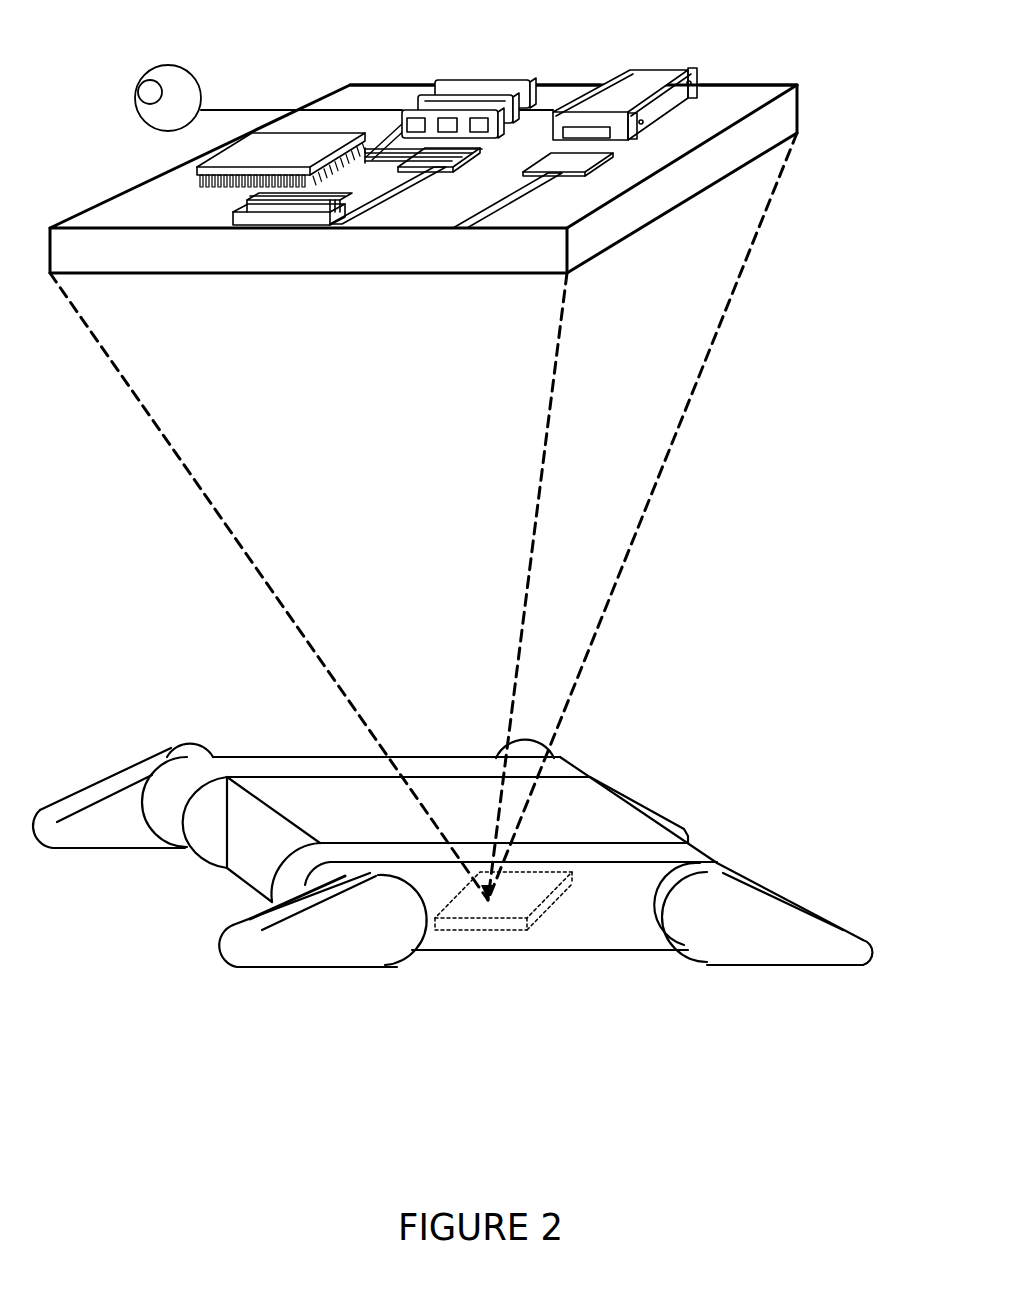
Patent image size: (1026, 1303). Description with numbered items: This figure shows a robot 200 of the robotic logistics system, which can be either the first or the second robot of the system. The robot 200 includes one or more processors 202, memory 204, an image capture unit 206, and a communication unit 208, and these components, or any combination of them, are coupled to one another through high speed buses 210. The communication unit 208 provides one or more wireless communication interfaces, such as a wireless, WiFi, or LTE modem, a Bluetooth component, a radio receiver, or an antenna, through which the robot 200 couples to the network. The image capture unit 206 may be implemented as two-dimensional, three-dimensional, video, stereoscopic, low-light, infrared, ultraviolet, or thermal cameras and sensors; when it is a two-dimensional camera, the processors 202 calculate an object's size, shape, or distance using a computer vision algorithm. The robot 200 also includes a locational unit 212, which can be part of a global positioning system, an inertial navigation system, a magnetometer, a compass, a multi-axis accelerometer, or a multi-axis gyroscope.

The robot 200 is at (443, 785).
The processors 202 is at (195, 170).
The memory 204 is at (461, 80).
The image capture unit 206 is at (158, 68).
The communication unit 208 is at (654, 72).
The high speed buses 210 is at (513, 160).
The locational unit 212 is at (583, 162).